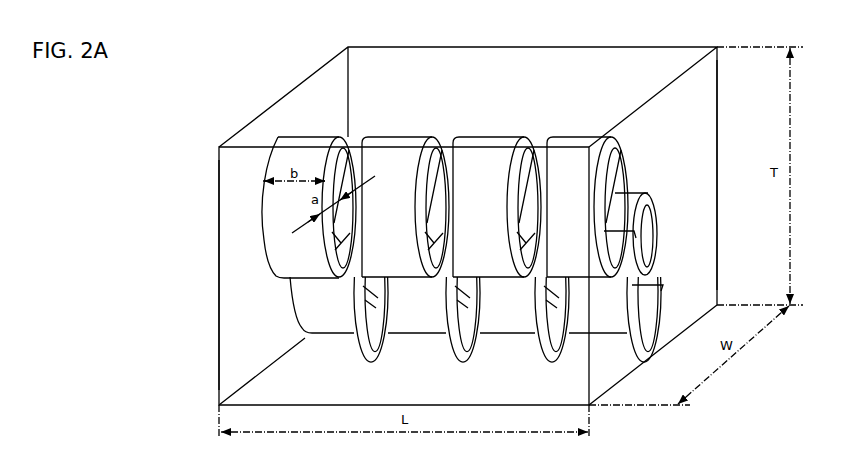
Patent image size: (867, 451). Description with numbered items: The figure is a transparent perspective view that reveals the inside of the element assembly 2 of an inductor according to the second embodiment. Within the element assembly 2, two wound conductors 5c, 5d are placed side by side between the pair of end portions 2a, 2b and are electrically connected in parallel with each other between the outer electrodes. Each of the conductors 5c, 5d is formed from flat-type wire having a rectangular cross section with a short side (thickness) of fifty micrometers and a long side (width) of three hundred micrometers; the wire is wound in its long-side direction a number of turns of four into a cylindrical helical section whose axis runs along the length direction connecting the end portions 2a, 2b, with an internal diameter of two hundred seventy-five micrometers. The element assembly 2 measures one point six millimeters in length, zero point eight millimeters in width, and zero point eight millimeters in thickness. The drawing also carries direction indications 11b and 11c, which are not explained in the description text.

The element assembly 2 is at (236, 123).
The end portion 2a is at (219, 236).
The end portion 2b is at (698, 233).
The conductor 5c is at (270, 217).
The conductor 5d is at (310, 310).
The coil conductor width direction 11b is at (468, 165).
The coil axial direction 11c is at (423, 445).